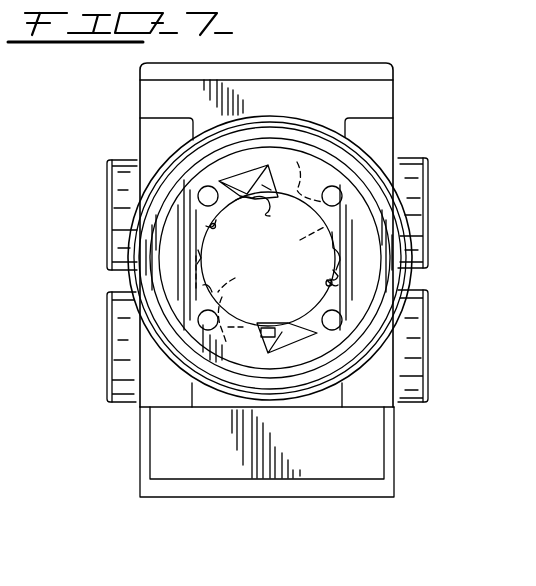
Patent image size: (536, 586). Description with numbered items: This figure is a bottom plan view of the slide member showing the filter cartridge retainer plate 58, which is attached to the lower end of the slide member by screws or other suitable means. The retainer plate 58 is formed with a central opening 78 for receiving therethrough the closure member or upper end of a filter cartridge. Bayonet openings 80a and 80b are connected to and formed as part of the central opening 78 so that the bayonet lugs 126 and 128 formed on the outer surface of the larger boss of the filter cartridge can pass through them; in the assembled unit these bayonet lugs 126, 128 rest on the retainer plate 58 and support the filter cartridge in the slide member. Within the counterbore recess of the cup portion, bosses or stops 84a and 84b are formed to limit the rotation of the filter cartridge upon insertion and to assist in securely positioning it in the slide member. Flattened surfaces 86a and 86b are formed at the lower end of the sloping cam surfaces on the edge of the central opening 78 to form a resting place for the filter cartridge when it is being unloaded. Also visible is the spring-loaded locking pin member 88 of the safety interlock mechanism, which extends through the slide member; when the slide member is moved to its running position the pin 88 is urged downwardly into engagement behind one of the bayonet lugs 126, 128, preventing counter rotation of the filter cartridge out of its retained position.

The cartridge retainer plate 58 is at (398, 204).
The central opening 78 is at (232, 307).
The bayonet opening 80a is at (211, 226).
The bayonet opening 80b is at (340, 289).
The stop member 84a is at (323, 233).
The stop member 84b is at (218, 290).
The flattened surface 86a is at (252, 196).
The flattened surface 86b is at (285, 322).
The locking pin member 88 is at (257, 333).
The bayonet lug 126 is at (227, 345).
The bayonet lug 128 is at (271, 175).